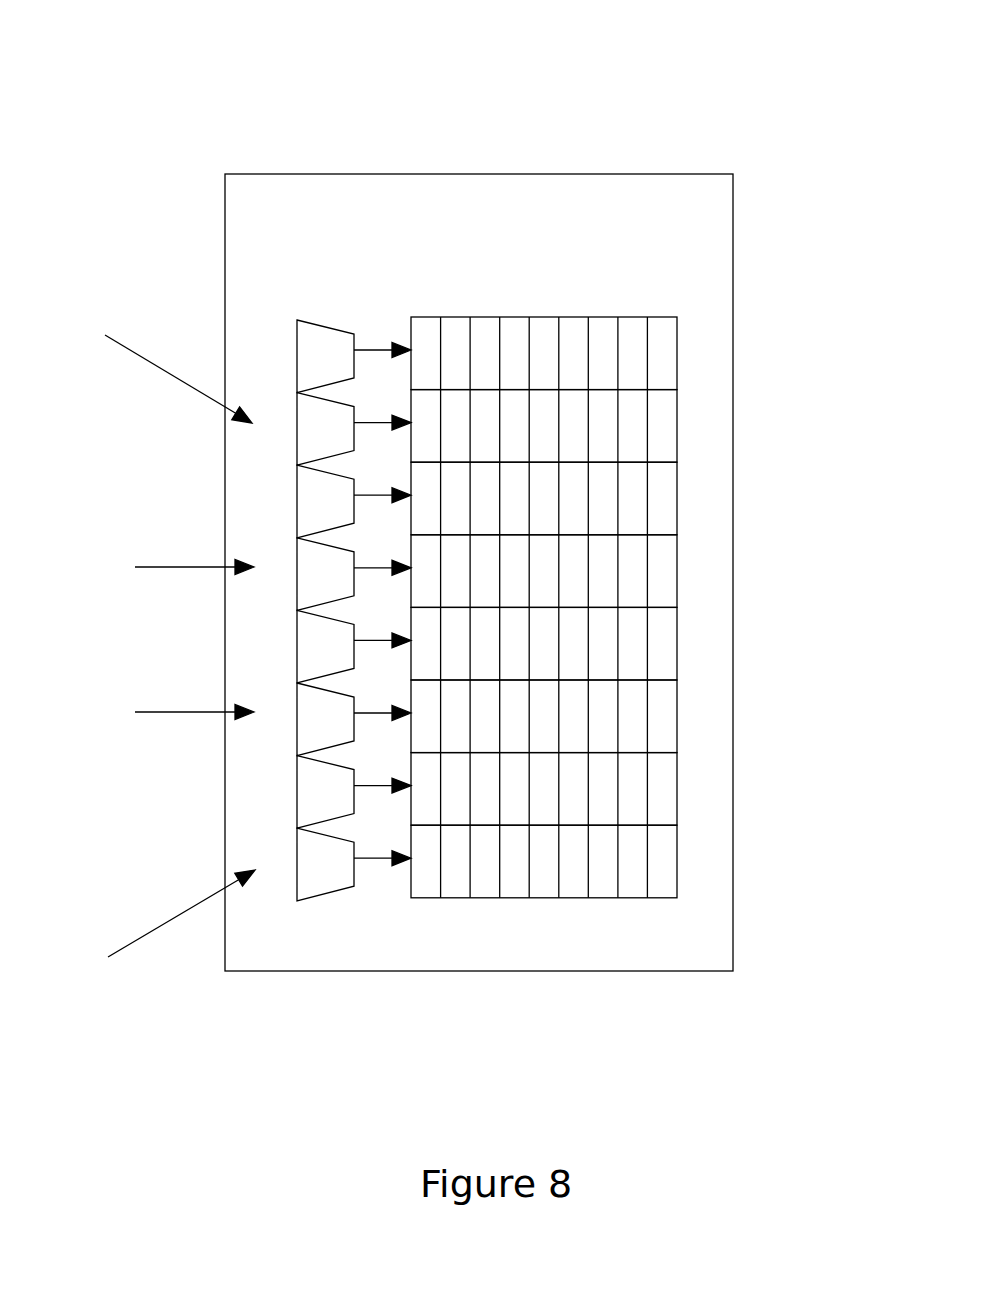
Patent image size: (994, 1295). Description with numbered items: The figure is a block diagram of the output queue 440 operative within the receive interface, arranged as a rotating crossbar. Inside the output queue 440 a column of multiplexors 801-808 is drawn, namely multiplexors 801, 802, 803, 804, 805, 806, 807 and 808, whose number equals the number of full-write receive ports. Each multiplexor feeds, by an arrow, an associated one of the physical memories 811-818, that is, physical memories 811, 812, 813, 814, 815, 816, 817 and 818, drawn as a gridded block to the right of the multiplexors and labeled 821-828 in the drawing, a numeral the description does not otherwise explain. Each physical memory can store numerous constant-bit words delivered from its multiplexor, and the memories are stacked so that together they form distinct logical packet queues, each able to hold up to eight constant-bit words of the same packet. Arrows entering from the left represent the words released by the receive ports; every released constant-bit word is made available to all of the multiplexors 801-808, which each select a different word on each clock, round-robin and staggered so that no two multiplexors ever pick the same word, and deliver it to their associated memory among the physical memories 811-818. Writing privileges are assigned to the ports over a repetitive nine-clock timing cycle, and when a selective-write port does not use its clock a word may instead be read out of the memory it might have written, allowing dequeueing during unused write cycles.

The output queue 440 is at (645, 160).
The multiplexors 801-808 is at (311, 317).
The multiplexor 801 is at (354, 356).
The multiplexor 802 is at (354, 429).
The multiplexor 803 is at (354, 501).
The multiplexor 804 is at (354, 574).
The multiplexor 805 is at (354, 646).
The multiplexor 806 is at (354, 719).
The multiplexor 807 is at (354, 792).
The multiplexor 808 is at (354, 864).
The cell array rows 821-828 is at (529, 307).
The physical memory 811 is at (638, 325).
The physical memory 812 is at (638, 398).
The physical memory 813 is at (638, 470).
The physical memory 814 is at (638, 543).
The physical memory 815 is at (638, 615).
The physical memory 816 is at (638, 688).
The physical memory 817 is at (638, 761).
The physical memory 818 is at (638, 833).